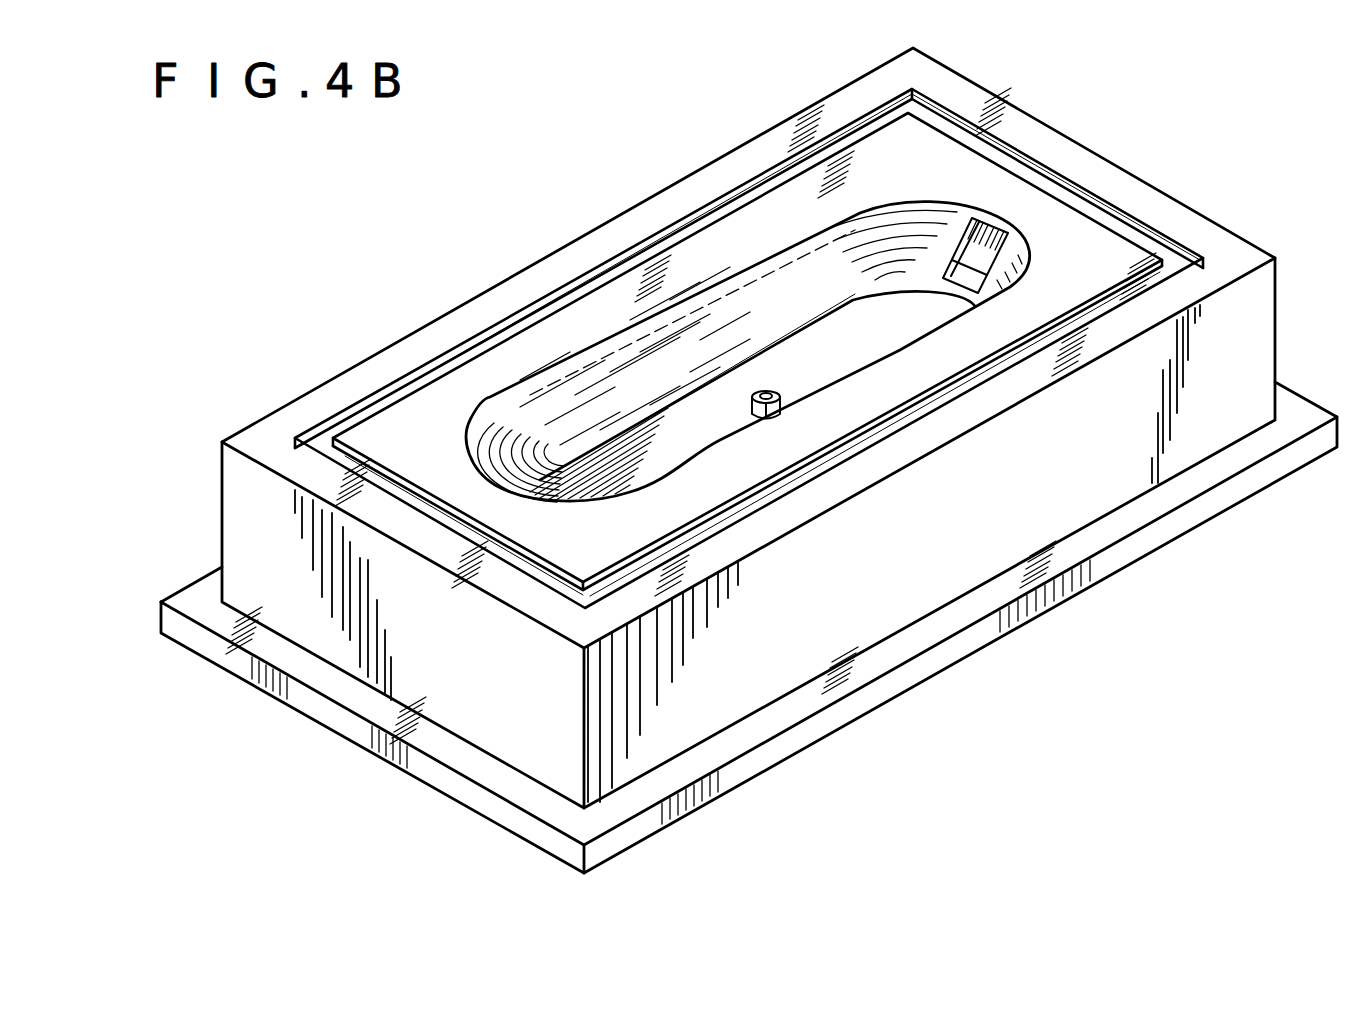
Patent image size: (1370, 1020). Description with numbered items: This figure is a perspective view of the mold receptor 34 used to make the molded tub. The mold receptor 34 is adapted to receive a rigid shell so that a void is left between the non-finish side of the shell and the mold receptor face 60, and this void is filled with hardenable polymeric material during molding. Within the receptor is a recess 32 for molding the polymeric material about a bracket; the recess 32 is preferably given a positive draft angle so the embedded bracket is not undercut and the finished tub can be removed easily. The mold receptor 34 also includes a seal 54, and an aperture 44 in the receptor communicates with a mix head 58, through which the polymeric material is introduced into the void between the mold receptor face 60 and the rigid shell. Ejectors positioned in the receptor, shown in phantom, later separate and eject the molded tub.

The recess 32 is at (997, 225).
The mold receptor 34 is at (481, 292).
The aperture 44 is at (771, 391).
The seal 54 is at (598, 290).
The mix head 58 is at (752, 424).
The mold receptor face 60 is at (760, 273).